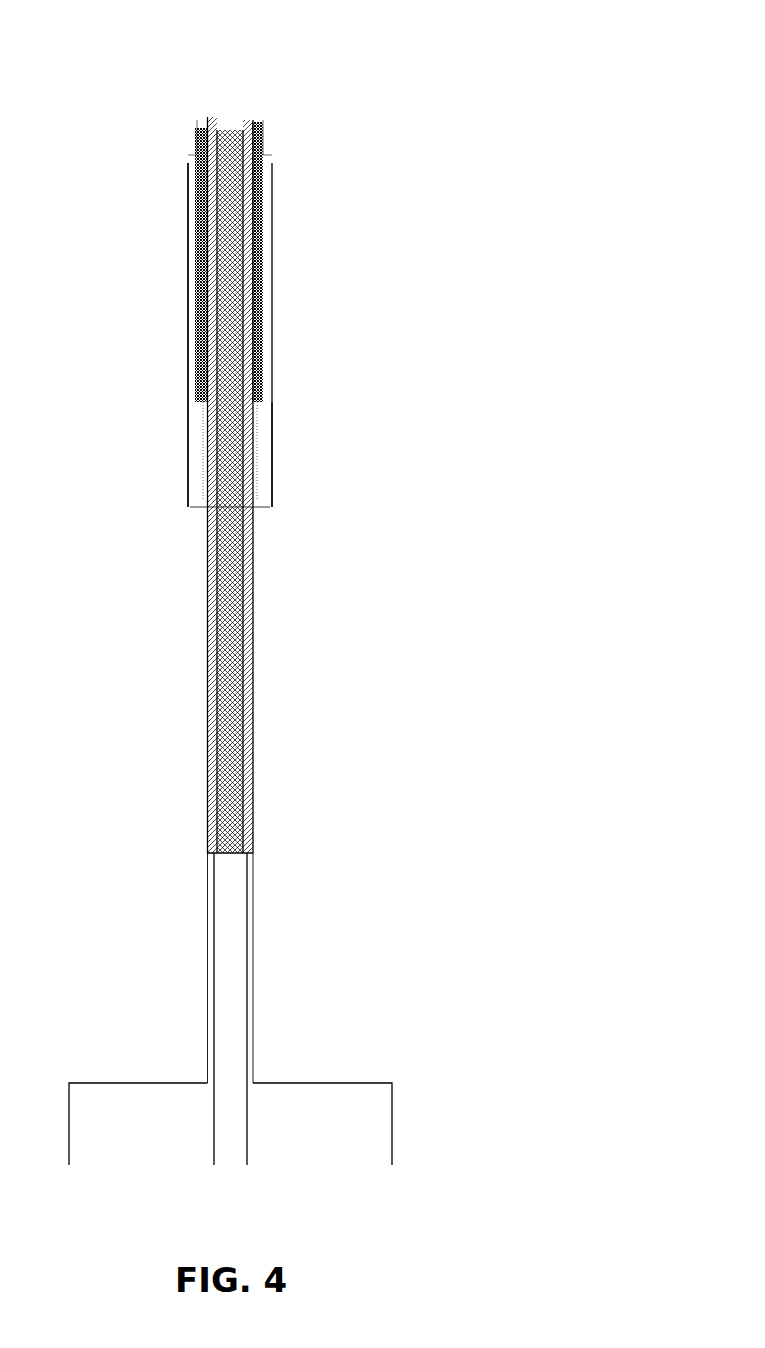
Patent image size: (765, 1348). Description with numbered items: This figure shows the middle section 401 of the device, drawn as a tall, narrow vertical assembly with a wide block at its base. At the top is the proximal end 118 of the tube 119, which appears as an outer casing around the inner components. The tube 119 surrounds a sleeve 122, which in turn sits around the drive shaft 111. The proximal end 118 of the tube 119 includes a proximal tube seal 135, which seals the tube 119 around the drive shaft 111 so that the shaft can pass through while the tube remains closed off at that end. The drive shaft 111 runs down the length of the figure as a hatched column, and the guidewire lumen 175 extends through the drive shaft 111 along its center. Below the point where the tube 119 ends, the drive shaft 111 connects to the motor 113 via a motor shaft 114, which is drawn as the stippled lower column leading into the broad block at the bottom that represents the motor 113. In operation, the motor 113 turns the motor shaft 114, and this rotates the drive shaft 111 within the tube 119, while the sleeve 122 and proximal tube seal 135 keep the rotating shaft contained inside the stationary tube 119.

The middle section 401 is at (218, 65).
The proximal end 118 is at (358, 358).
The sleeve 122 is at (207, 187).
The tube 119 is at (187, 335).
The proximal tube seal 135 is at (272, 435).
The drive shaft 111 is at (253, 577).
The guidewire lumen 175 is at (228, 803).
The motor shaft 114 is at (225, 965).
The motor 113 is at (323, 1082).